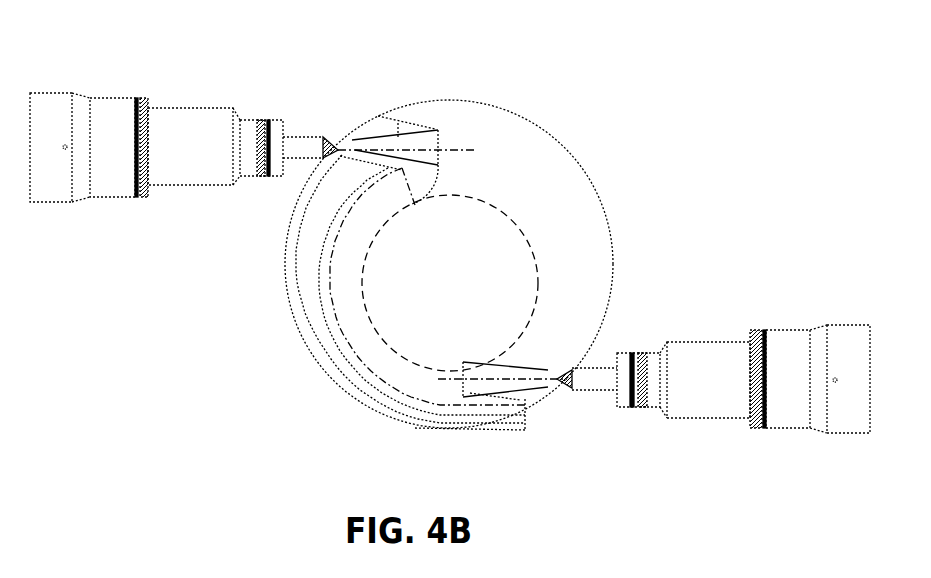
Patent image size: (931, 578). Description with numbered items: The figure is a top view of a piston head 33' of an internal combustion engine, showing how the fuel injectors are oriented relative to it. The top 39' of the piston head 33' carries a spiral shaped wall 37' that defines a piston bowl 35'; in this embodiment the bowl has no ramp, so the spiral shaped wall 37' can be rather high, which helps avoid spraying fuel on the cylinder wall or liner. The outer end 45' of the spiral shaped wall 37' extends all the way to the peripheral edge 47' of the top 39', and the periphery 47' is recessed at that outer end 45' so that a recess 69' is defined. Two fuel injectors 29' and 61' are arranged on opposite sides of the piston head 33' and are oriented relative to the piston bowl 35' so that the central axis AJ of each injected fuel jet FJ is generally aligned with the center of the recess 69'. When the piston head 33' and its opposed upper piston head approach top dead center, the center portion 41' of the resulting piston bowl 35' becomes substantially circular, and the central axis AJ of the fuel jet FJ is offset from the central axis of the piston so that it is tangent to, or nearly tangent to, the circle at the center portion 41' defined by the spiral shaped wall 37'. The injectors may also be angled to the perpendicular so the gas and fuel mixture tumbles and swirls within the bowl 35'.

The fuel injector 29' is at (713, 341).
The piston head 33' is at (686, 110).
The piston bowl 35' is at (600, 180).
The spiral shaped wall 37' is at (375, 273).
The top of the piston head 39' is at (461, 249).
The center portion of the piston bowl 41' is at (547, 283).
The outer end of the spiral shaped wall 45' is at (539, 433).
The peripheral edge of the top of the piston head 47' is at (319, 431).
The fuel injector 61' is at (184, 106).
The recess 69' is at (586, 422).
The injected fuel jet FJ is at (408, 142).
The central axis of the injected fuel jet AJ is at (454, 150).